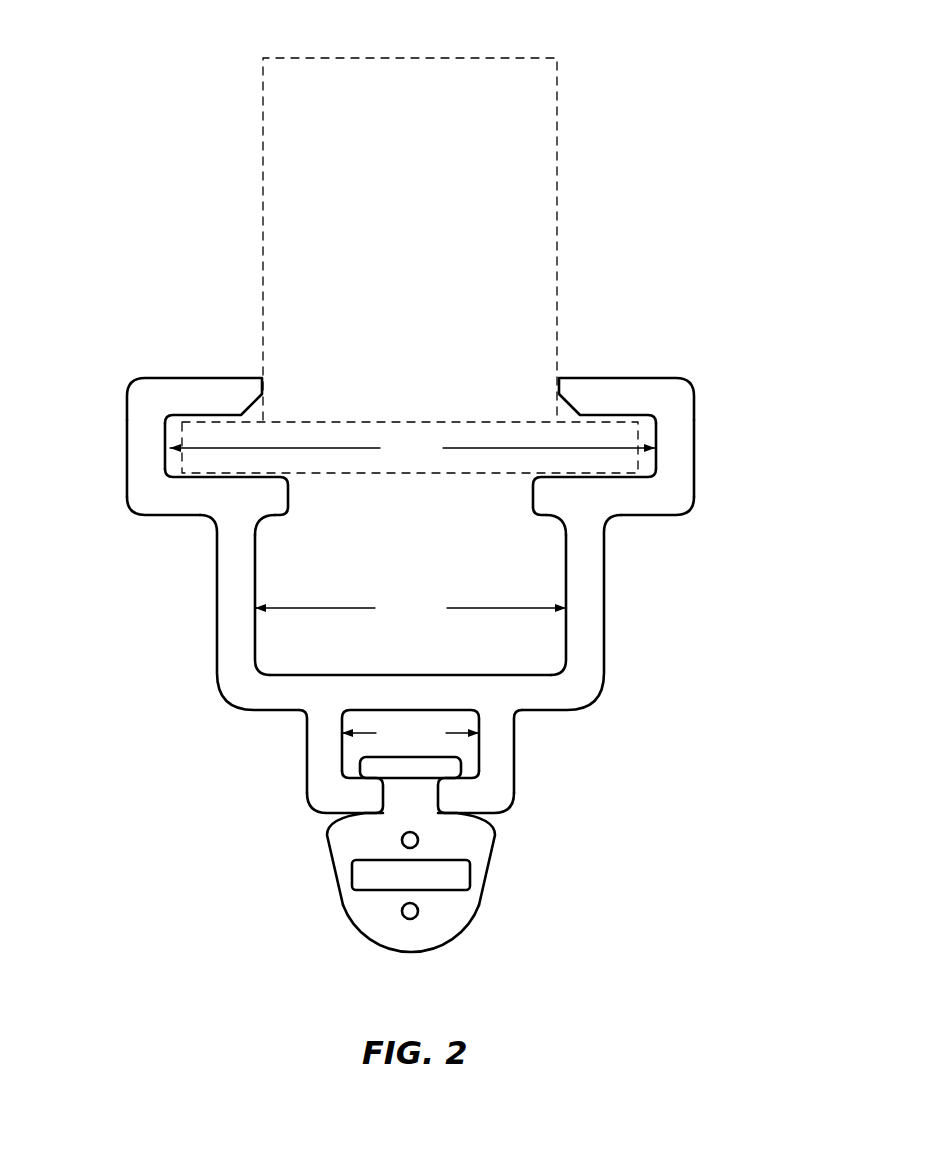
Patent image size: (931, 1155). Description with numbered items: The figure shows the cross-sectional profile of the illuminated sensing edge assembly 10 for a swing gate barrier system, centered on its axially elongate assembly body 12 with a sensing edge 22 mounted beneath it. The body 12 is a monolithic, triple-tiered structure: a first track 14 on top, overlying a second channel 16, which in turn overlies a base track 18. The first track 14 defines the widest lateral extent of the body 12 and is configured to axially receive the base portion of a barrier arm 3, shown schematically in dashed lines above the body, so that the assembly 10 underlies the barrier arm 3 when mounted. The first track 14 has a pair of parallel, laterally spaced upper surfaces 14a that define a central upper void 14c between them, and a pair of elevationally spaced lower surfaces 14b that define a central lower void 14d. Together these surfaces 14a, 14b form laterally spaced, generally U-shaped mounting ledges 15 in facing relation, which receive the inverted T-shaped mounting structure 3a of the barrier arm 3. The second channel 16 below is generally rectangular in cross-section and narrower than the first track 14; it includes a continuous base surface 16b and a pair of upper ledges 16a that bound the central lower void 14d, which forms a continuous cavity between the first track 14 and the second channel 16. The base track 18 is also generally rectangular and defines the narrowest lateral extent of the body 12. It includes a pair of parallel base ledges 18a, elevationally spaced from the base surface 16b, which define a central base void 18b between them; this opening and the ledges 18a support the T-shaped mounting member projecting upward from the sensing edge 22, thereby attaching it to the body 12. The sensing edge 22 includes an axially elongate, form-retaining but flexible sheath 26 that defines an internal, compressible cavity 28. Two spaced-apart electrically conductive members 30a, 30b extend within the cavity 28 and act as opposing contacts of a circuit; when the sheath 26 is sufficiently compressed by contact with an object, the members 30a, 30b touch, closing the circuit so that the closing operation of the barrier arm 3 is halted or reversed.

The illuminated sensing edge assembly 10 is at (192, 258).
The barrier arm 3 is at (558, 178).
The inverted T-shaped mounting structure 3a is at (583, 418).
The assembly body 12 is at (618, 591).
The first track 14 is at (708, 456).
The upper surfaces 14a is at (208, 392).
The lower surfaces 14b is at (220, 492).
The central upper void 14c is at (419, 393).
The central lower void 14d is at (421, 495).
The U-shaped mounting ledges 15 is at (172, 433).
The second channel 16 is at (205, 654).
The upper ledges 16a is at (273, 503).
The base surface 16b is at (430, 687).
The base track 18 is at (297, 759).
The base ledges 18a is at (365, 800).
The central base void 18b is at (400, 803).
The sensing edge 22 is at (320, 877).
The sheath 26 is at (362, 937).
The cavity 28 is at (442, 875).
The electrically conductive member 30a is at (420, 840).
The electrically conductive member 30b is at (422, 909).